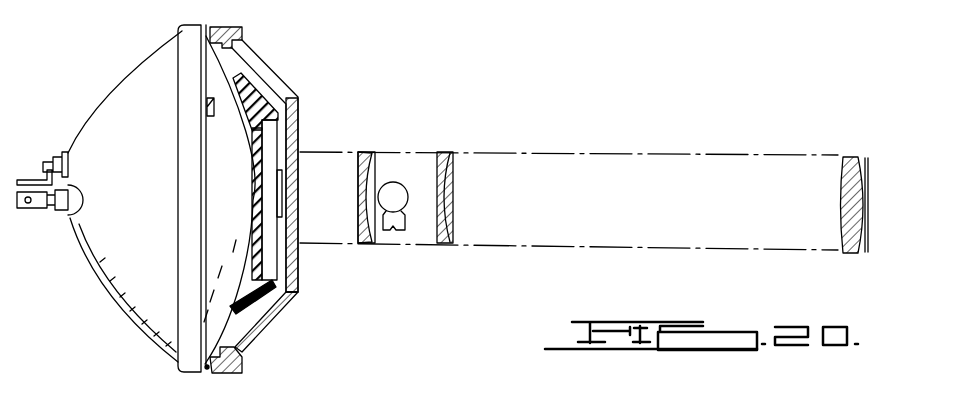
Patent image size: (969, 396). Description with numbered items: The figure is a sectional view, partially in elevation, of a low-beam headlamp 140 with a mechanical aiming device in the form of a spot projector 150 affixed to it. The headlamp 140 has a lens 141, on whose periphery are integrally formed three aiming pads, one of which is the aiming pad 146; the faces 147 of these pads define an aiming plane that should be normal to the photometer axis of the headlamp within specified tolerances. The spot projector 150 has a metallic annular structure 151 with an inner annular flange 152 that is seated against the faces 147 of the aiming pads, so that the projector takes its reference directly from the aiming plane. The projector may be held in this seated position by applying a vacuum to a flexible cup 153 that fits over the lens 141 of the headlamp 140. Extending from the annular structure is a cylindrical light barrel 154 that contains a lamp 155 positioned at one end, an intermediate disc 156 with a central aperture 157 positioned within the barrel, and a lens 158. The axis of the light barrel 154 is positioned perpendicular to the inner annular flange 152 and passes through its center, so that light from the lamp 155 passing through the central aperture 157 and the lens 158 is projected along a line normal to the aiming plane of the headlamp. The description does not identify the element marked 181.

The low-beam headlamp 140 is at (96, 107).
The lens 141 is at (234, 308).
The aiming pad 146 is at (210, 364).
The faces of the aiming pads 147 is at (245, 347).
The spot projector 150 is at (569, 142).
The metallic annular structure 151 is at (270, 75).
The inner annular flange 152 is at (210, 37).
The flexible cup 153 is at (250, 298).
The cylindrical light barrel 154 is at (623, 153).
The lamp 155 is at (398, 190).
The intermediate disc 156 is at (450, 223).
The central aperture 157 is at (440, 196).
The lens 158 is at (846, 192).
The mounting block 181 is at (272, 371).